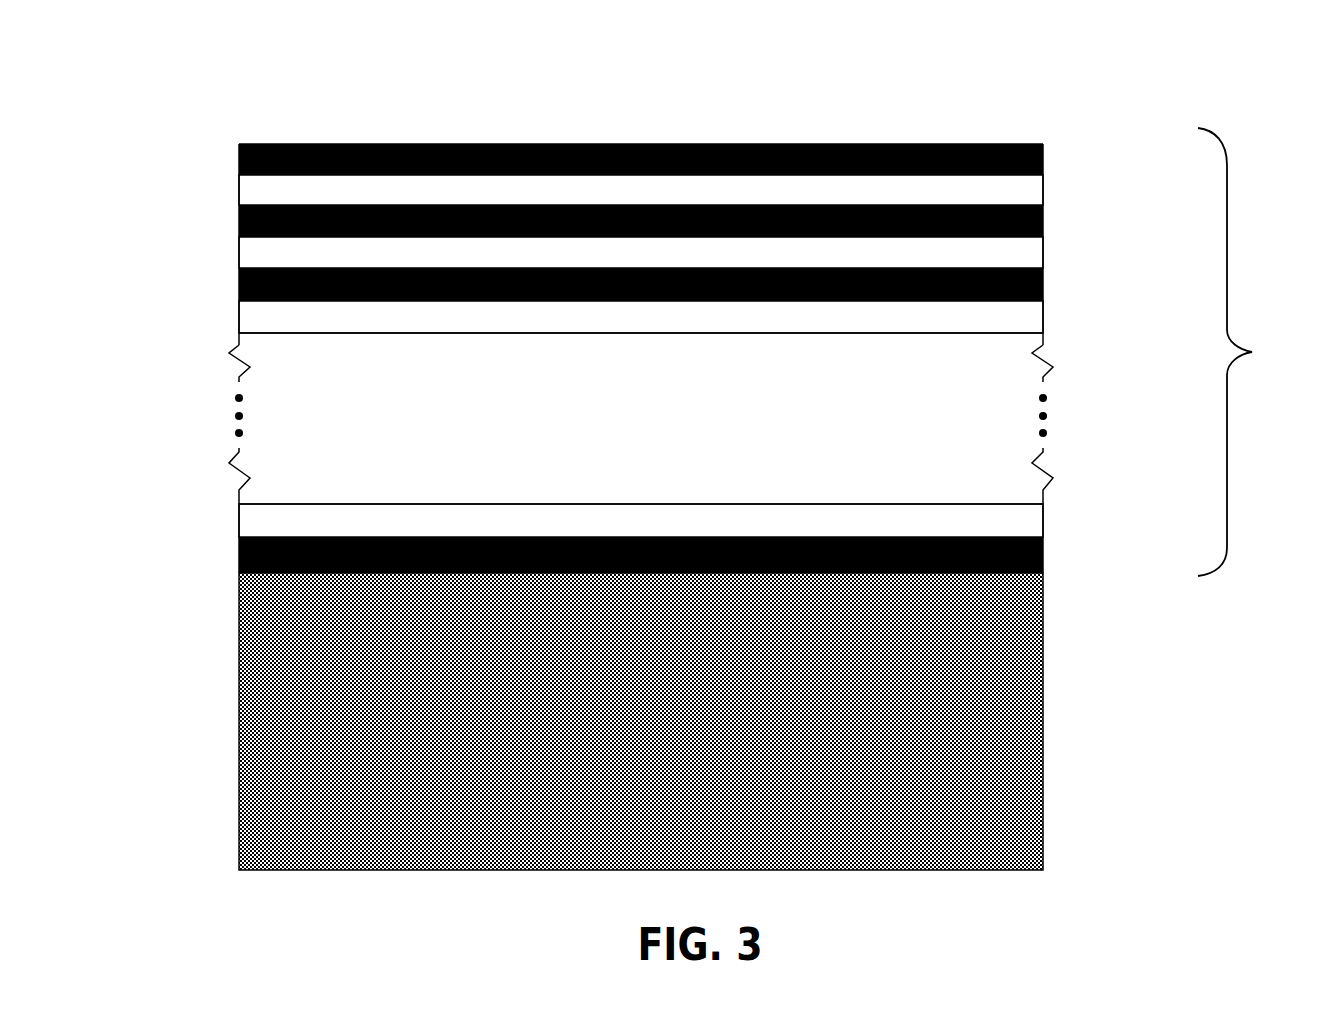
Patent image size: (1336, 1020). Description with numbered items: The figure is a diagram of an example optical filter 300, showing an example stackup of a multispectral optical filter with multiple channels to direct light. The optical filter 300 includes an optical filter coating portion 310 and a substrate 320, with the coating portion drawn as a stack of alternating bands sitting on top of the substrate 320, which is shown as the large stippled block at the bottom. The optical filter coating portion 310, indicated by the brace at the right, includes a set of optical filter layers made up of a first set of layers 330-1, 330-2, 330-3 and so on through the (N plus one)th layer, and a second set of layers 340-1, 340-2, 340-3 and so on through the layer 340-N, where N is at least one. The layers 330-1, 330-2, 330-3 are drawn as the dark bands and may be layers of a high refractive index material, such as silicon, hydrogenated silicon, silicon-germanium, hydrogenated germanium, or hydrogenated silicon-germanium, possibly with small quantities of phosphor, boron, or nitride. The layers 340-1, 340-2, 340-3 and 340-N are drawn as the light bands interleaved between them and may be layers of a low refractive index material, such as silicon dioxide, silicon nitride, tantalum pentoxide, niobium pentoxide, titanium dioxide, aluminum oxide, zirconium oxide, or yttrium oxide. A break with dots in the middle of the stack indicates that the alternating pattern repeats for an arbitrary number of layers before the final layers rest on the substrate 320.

The optical filter 300 is at (196, 61).
The optical filter coating portion 310 is at (1303, 364).
The substrate 320 is at (659, 731).
The first layer of first set of layers 330-1 is at (1132, 173).
The second layer of first set of layers 330-2 is at (1132, 234).
The third layer of first set of layers 330-3 is at (1132, 297).
The first layer of second set of layers 340-1 is at (239, 192).
The second layer of second set of layers 340-2 is at (239, 253).
The third layer of second set of layers 340-3 is at (239, 318).
The Nth layer of second set of layers 340-N is at (239, 520).